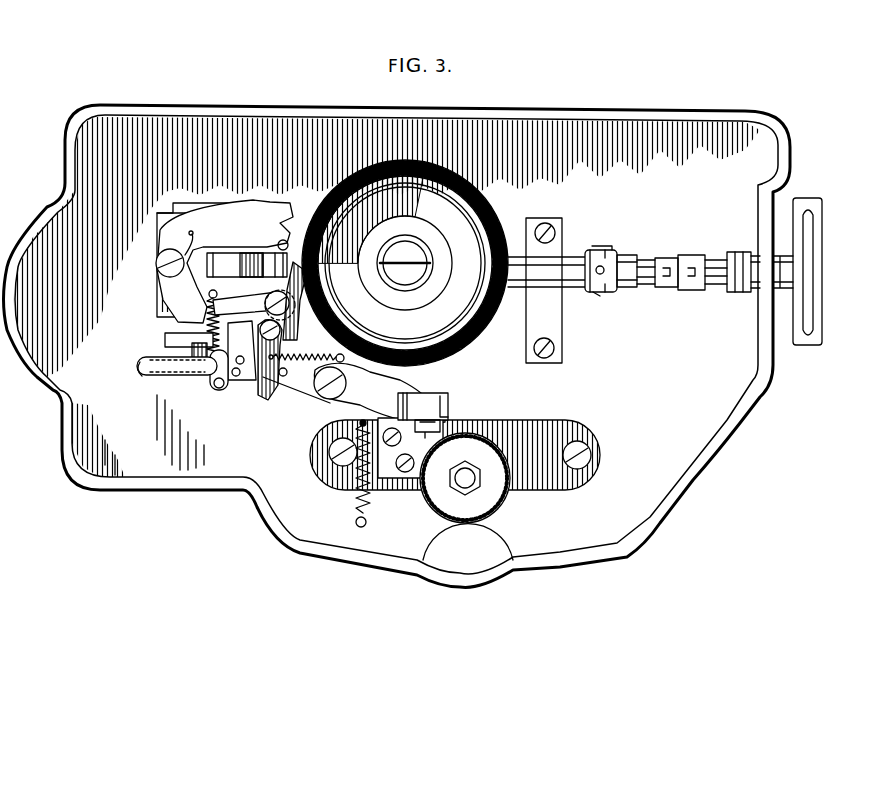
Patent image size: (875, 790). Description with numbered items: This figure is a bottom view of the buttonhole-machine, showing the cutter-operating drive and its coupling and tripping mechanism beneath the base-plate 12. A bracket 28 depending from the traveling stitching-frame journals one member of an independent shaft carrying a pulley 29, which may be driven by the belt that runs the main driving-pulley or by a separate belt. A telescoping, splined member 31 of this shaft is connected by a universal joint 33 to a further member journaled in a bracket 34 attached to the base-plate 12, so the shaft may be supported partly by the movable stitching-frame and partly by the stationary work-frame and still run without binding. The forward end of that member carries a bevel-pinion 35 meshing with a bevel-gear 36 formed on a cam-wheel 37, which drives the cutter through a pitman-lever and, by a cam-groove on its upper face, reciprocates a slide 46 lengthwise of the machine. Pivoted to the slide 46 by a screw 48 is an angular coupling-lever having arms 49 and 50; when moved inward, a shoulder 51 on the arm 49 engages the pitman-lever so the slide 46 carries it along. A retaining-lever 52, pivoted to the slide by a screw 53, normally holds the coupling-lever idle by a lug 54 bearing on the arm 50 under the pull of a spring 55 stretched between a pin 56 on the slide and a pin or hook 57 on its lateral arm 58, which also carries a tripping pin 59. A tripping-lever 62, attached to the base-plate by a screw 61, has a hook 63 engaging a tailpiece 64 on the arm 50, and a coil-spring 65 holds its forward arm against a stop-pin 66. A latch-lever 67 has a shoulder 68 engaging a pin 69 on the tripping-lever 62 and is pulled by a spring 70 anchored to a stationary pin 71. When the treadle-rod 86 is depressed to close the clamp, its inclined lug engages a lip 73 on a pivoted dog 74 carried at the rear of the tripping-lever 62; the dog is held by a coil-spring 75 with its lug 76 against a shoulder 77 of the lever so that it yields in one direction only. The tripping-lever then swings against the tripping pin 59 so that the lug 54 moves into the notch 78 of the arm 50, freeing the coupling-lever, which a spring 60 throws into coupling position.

The base-plate 12 is at (397, 346).
The bracket 28 is at (750, 296).
The pulley 29 is at (822, 280).
The shaft member 31 is at (648, 278).
The universal joint 33 is at (592, 280).
The bracket 34 is at (540, 280).
The bevel-pinion 35 is at (503, 240).
The bevel-gear 36 is at (340, 192).
The cam-wheel 37 is at (478, 318).
The slide 46 is at (162, 230).
The screw 48 is at (160, 270).
The arm 49 is at (232, 222).
The arm 50 is at (170, 297).
The shoulder 51 is at (276, 232).
The retaining-lever 52 is at (246, 306).
The screw 53 is at (272, 299).
The lug 54 is at (166, 333).
The spring 55 is at (213, 360).
The pin 56 is at (211, 294).
The pin or hook 57 is at (262, 386).
The lateral arm 58 is at (242, 350).
The tripping pin 59 is at (221, 390).
The spring 60 is at (185, 246).
The screw 61 is at (192, 353).
The tripping-lever 62 is at (286, 378).
The hook 63 is at (152, 372).
The tailpiece 64 is at (178, 378).
The coil-spring 65 is at (355, 509).
The stop-pin 66 is at (244, 373).
The latch-lever 67 is at (300, 301).
The shoulder 68 is at (272, 396).
The pin 69 is at (300, 392).
The spring 70 is at (321, 383).
The stationary pin 71 is at (344, 361).
The lip 73 is at (452, 432).
The pivoted dog 74 is at (427, 400).
The coil-spring 75 is at (410, 448).
The lug 76 is at (402, 398).
The shoulder 77 is at (399, 402).
The notch 78 is at (192, 338).
The treadle-rod 86 is at (473, 412).